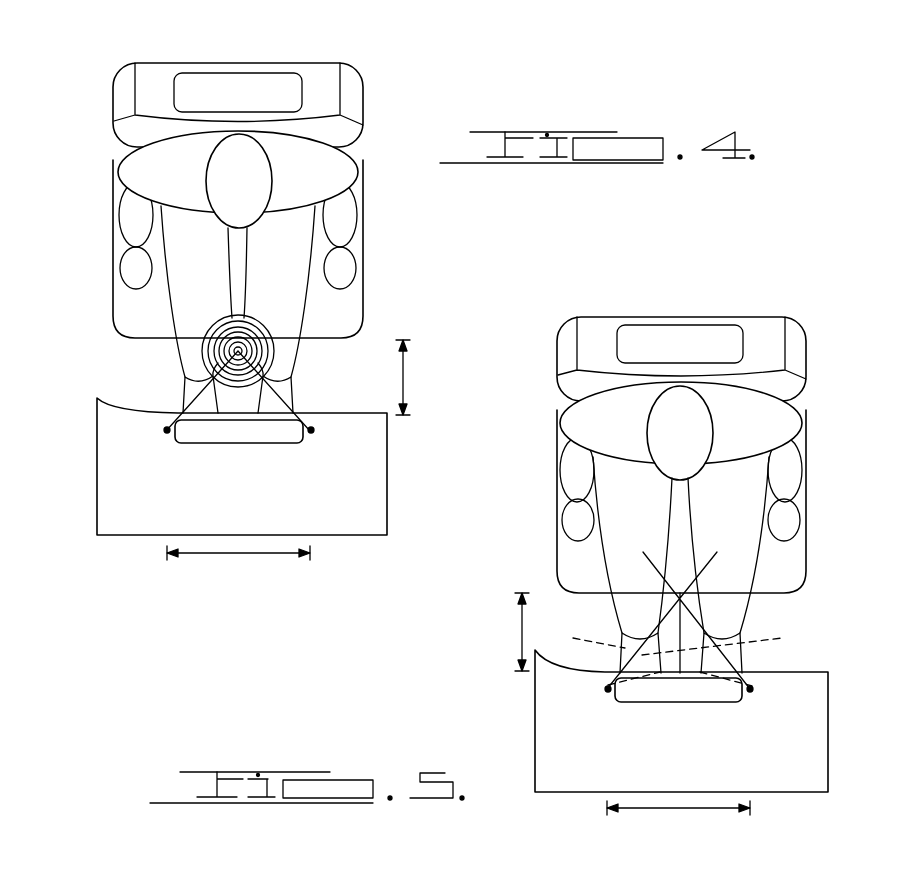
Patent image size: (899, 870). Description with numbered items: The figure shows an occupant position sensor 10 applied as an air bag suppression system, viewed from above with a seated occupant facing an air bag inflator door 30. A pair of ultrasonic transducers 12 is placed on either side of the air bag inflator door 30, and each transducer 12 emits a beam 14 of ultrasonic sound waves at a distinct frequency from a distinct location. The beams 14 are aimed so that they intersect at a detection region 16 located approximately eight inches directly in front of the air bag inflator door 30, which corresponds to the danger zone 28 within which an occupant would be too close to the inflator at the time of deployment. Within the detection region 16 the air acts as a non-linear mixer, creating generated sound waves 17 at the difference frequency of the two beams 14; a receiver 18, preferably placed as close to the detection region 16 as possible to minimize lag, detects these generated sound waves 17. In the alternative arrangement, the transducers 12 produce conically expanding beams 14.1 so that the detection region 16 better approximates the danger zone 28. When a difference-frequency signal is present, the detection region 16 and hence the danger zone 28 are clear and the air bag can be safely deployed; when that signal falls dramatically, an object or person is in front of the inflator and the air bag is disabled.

In FIG. 4, the occupant position sensor 10 is at (83, 328).
In FIG. 5, the occupant position sensor 10 is at (828, 568).
In FIG. 4, the ultrasonic transducer 12 is at (166, 432).
In FIG. 5, the ultrasonic transducer 12 is at (607, 691).
In FIG. 4, the beam of ultrasonic sound waves 14 is at (187, 400).
In FIG. 5, the conically expanding beam of ultrasonic sound waves 14.1 is at (628, 663).
In FIG. 4, the detection region 16 is at (284, 343).
In FIG. 5, the detection region 16 is at (668, 632).
In FIG. 4, the generated sound waves 17 is at (204, 338).
In FIG. 4, the receiver 18 is at (325, 424).
In FIG. 5, the receiver 18 is at (677, 712).
In FIG. 4, the danger zone 28 is at (305, 462).
In FIG. 5, the danger zone 28 is at (618, 715).
In FIG. 4, the air bag inflator door 30 is at (237, 437).
In FIG. 5, the air bag inflator door 30 is at (645, 696).